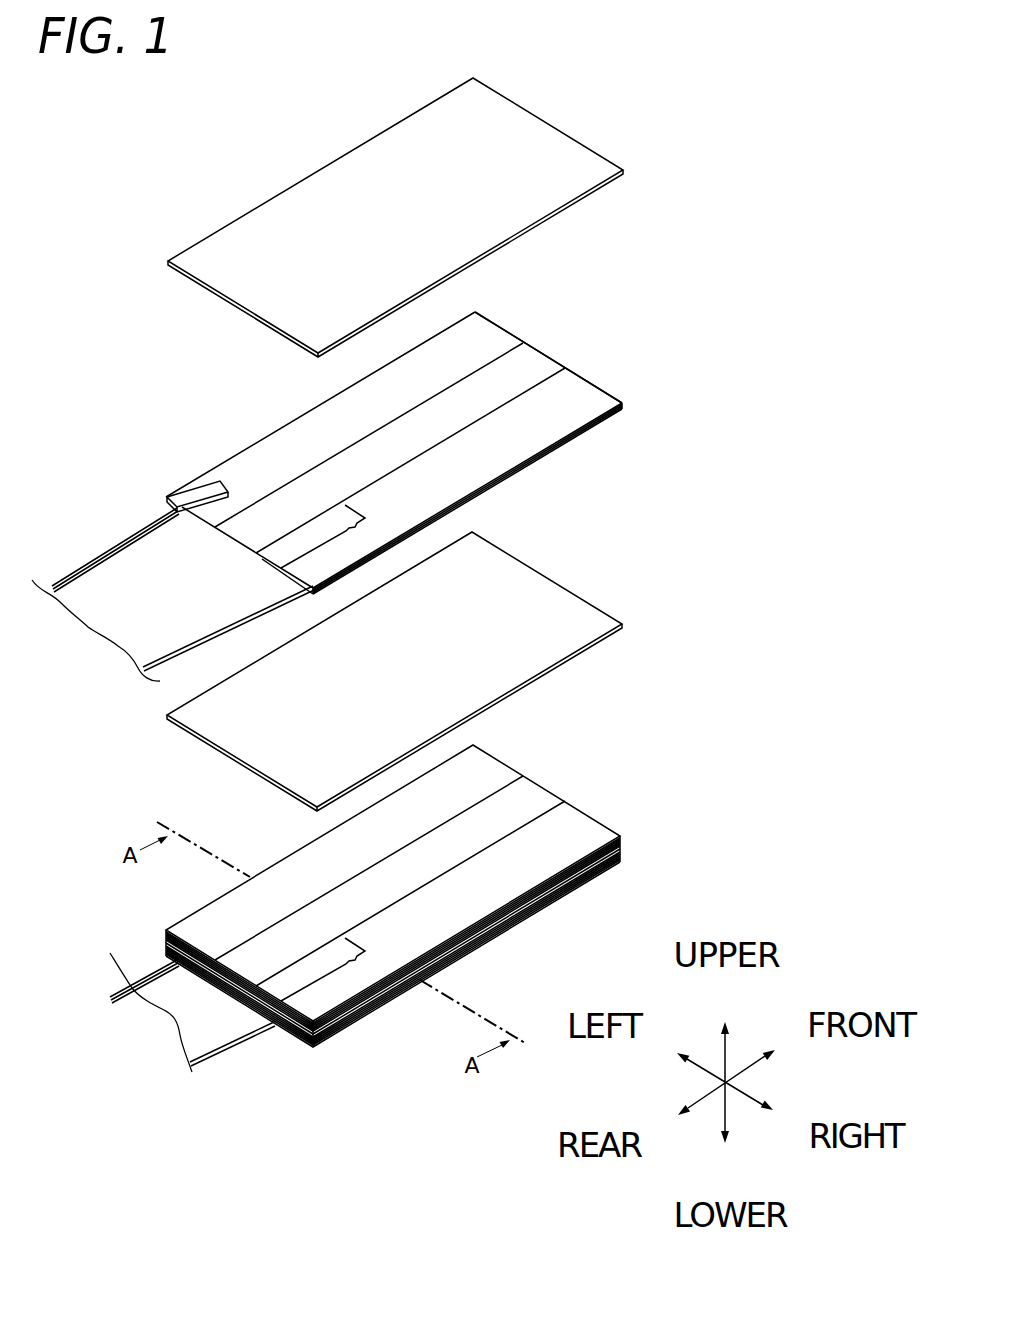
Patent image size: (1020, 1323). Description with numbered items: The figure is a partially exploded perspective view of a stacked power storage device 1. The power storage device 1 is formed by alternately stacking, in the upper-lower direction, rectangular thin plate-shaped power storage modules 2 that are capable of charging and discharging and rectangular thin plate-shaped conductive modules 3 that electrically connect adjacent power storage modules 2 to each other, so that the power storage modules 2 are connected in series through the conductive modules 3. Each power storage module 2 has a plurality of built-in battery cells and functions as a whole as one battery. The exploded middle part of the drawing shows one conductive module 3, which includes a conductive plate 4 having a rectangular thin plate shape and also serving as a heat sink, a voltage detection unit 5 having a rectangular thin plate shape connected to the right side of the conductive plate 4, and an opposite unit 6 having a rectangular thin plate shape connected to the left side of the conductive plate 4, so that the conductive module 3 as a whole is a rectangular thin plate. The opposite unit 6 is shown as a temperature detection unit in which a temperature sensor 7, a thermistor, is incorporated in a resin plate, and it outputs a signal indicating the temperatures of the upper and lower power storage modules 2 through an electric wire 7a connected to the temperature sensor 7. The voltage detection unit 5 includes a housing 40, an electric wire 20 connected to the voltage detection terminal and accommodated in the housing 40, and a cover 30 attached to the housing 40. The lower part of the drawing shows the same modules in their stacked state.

The stacked power storage device 1 is at (696, 139).
The power storage module 2 is at (640, 167).
The conductive module 3 is at (663, 258).
The conductive plate 4 is at (561, 348).
The voltage detection unit 5 is at (606, 377).
The opposite unit 6 is at (516, 320).
The temperature sensor 7 is at (201, 486).
The electric wire 7a is at (102, 548).
The electric wire 20 is at (200, 615).
The cover 30 is at (382, 531).
The housing 40 is at (504, 446).